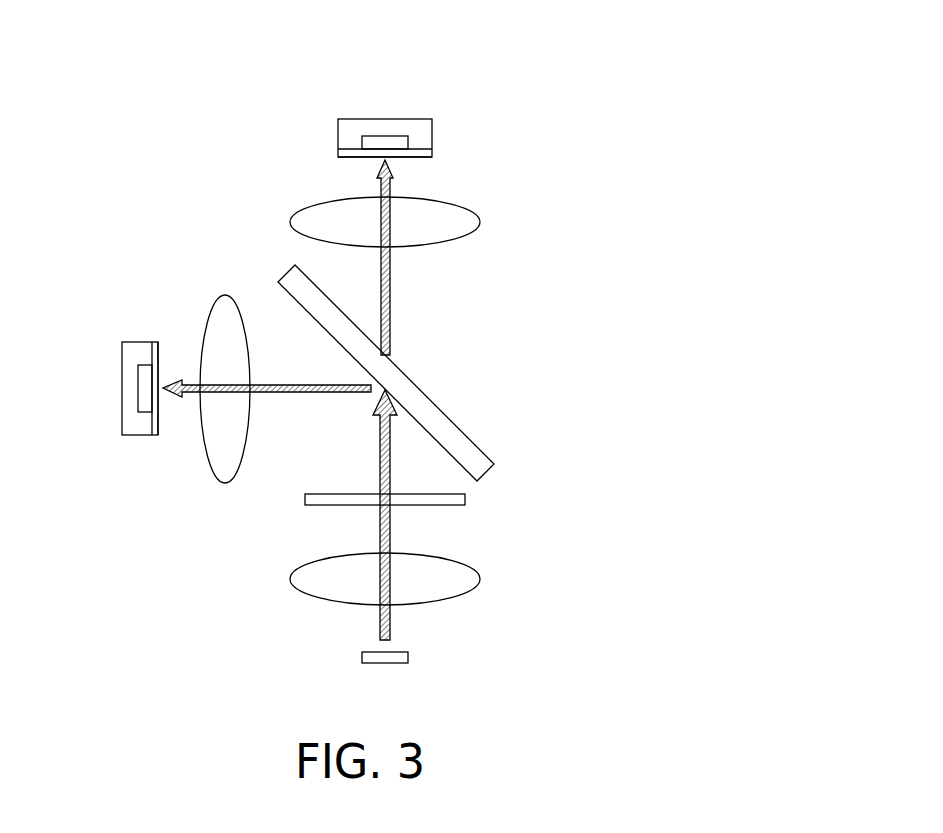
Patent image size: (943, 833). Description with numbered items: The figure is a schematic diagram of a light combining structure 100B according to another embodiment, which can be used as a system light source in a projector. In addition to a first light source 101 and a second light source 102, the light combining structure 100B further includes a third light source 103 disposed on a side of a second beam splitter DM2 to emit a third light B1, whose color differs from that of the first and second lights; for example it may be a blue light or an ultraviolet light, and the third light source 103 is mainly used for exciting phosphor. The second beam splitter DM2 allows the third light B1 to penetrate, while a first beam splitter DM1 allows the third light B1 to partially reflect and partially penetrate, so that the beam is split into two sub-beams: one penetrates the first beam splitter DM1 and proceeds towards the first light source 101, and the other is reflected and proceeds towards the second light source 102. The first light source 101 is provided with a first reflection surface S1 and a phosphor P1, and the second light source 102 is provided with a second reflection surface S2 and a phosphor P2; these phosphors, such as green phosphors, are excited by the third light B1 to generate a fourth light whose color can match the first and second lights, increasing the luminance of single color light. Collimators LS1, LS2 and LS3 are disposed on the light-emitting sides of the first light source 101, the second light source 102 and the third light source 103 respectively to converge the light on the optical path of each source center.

The light combining structure 100B is at (690, 35).
The first light source 101 is at (377, 136).
The first reflection surface S1 is at (406, 119).
The phosphor P1 is at (432, 152).
The collimator LS1 is at (452, 203).
The first beam splitter DM1 is at (470, 440).
The collimator LS2 is at (223, 295).
The second reflection surface S2 is at (122, 363).
The phosphor P2 is at (153, 435).
The second light source 102 is at (138, 393).
The second beam splitter DM2 is at (437, 505).
The third light B1 is at (380, 531).
The collimator LS3 is at (450, 598).
The third light source 103 is at (387, 663).